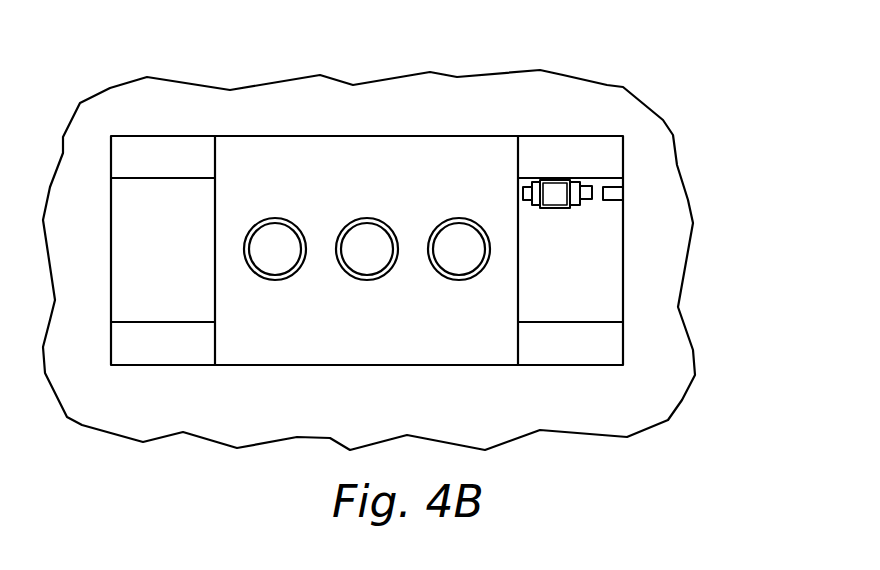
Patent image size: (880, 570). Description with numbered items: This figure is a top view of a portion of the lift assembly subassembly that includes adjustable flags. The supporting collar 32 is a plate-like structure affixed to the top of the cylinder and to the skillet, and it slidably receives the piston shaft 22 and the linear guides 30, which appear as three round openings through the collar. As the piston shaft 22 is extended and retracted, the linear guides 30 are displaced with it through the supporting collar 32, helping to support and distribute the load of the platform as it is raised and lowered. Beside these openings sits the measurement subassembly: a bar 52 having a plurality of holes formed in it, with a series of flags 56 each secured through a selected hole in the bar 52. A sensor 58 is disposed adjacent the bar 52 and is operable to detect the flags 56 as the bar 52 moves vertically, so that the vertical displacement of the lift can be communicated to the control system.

The supporting collar 32 is at (345, 153).
The linear guides 30 is at (280, 258).
The piston shaft 22 is at (365, 263).
The bar 52 is at (563, 180).
The flags 56 is at (588, 186).
The sensor 58 is at (613, 200).